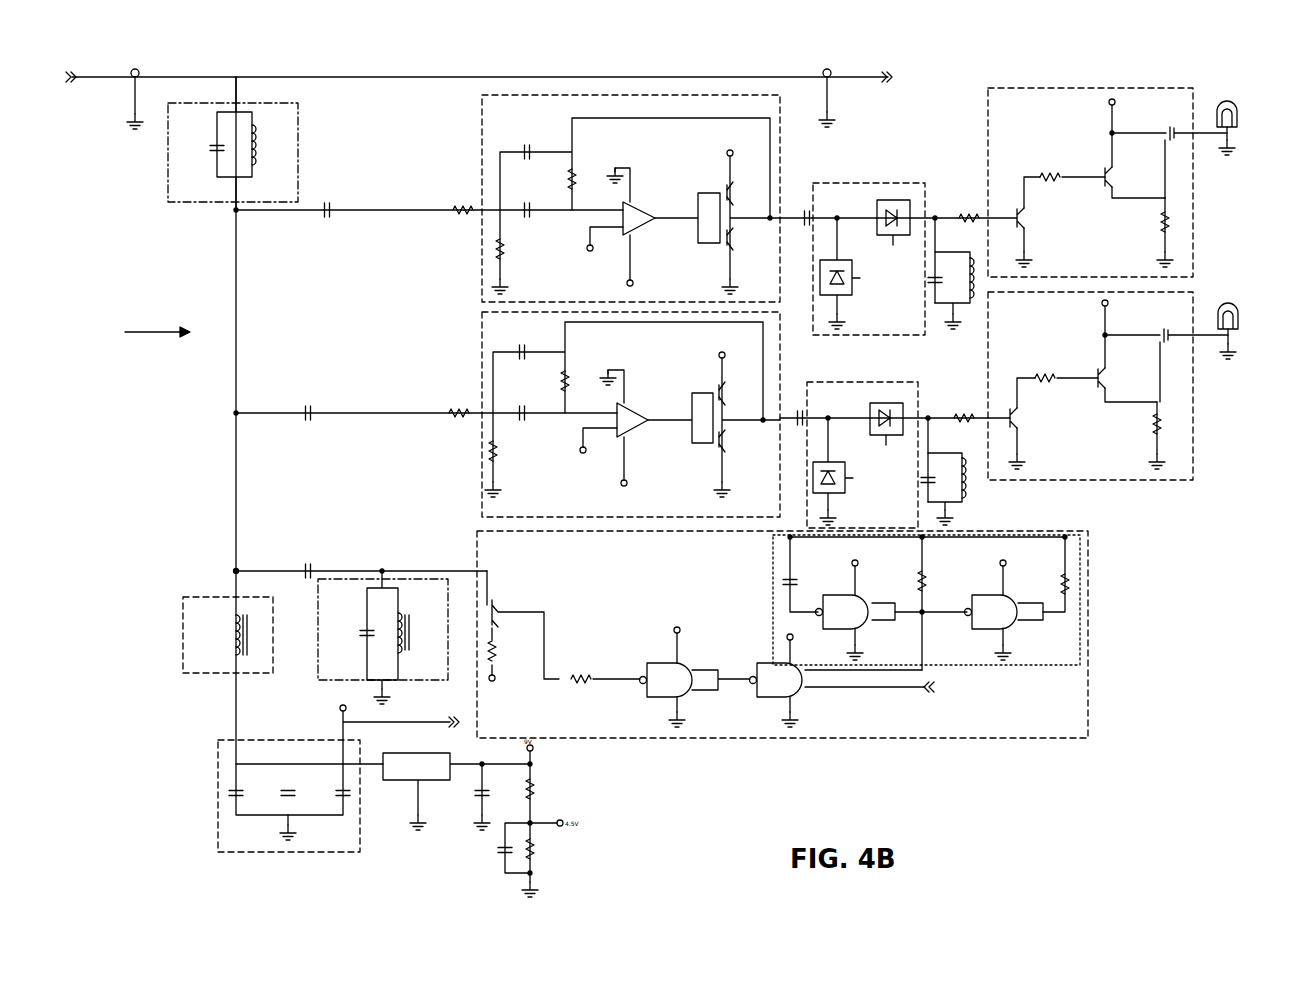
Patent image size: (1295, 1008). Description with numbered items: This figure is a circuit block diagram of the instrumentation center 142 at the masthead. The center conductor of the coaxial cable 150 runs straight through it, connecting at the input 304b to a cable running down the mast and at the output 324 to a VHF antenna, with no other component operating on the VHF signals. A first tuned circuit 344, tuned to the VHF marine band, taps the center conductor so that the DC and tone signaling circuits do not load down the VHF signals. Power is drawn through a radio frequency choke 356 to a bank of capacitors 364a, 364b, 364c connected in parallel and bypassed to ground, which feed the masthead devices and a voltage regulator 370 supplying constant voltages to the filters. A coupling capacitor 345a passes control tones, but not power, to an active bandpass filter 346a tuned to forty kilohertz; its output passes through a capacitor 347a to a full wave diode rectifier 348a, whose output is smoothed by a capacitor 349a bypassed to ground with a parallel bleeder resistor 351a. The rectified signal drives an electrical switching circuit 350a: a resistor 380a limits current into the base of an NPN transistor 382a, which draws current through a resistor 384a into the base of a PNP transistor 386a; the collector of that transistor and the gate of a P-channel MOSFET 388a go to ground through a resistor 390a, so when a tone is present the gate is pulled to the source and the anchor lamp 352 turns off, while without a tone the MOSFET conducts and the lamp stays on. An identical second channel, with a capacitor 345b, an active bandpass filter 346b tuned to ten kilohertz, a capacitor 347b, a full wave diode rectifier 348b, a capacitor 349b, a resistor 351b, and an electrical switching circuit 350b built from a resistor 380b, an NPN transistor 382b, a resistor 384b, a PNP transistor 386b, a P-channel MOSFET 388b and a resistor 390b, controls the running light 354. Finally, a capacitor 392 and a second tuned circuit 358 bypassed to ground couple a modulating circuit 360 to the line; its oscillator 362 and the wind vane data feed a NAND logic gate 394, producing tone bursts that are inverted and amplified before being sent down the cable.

The instrumentation center 142 is at (141, 332).
The coaxial cable 150 is at (390, 82).
The input 304b is at (75, 82).
The output 324 is at (893, 75).
The first tuned circuit 344 is at (222, 197).
The capacitor 345a is at (332, 215).
The capacitor 345b is at (312, 418).
The active bandpass filter 346a is at (490, 128).
The active bandpass filter 346b is at (490, 335).
The capacitor 347a is at (812, 212).
The capacitor 347b is at (805, 412).
The full wave diode rectifier 348a is at (868, 190).
The full wave diode rectifier 348b is at (862, 395).
The capacitor 349a is at (930, 285).
The capacitor 349b is at (922, 485).
The electrical switching circuit 350a is at (1080, 182).
The electrical switching circuit 350b is at (1114, 419).
The resistor 351a is at (960, 270).
The resistor 351b is at (965, 480).
The anchor lamp 352 is at (1222, 100).
The running light 354 is at (1225, 300).
The radio frequency choke 356 is at (222, 597).
The second tuned circuit 358 is at (355, 580).
The modulating circuit 360 is at (775, 621).
The oscillator 362 is at (1078, 548).
The capacitor 364a is at (232, 790).
The capacitor 364b is at (285, 800).
The capacitor 364c is at (348, 800).
The voltage regulator 370 is at (420, 782).
The resistor 380a is at (985, 212).
The resistor 380b is at (980, 412).
The NPN transistor 382a is at (1027, 222).
The NPN transistor 382b is at (1020, 422).
The resistor 384a is at (1050, 170).
The resistor 384b is at (1045, 370).
The PNP transistor 386a is at (1100, 172).
The PNP transistor 386b is at (1093, 373).
The P-channel MOSFET 388a is at (1178, 148).
The P-channel MOSFET 388b is at (1172, 352).
The resistor 390a is at (1168, 225).
The resistor 390b is at (1160, 428).
The capacitor 392 is at (312, 565).
The NAND logic gate 394 is at (765, 663).